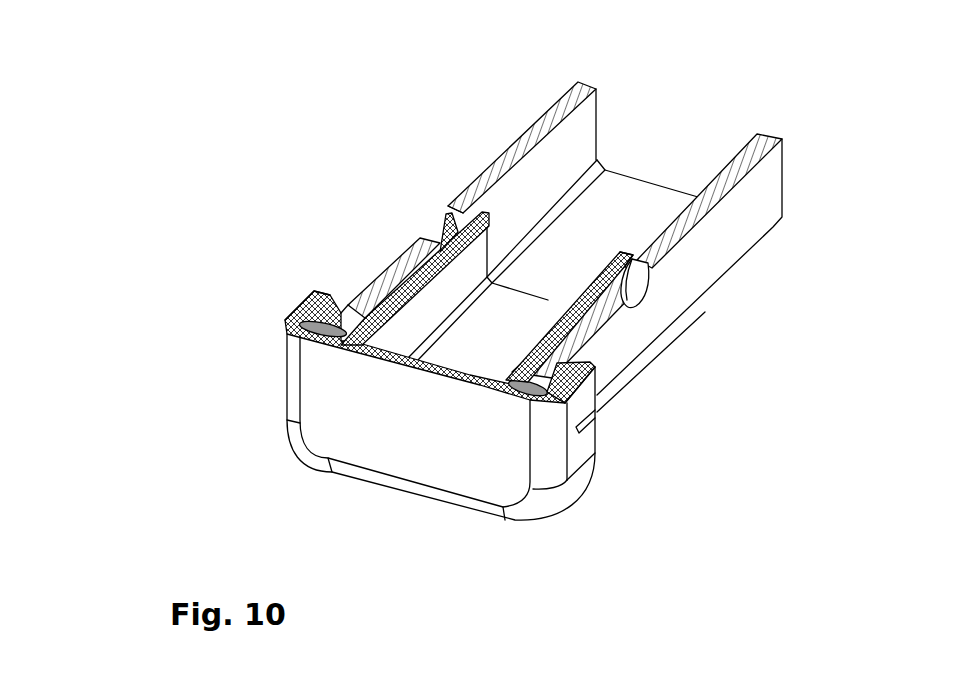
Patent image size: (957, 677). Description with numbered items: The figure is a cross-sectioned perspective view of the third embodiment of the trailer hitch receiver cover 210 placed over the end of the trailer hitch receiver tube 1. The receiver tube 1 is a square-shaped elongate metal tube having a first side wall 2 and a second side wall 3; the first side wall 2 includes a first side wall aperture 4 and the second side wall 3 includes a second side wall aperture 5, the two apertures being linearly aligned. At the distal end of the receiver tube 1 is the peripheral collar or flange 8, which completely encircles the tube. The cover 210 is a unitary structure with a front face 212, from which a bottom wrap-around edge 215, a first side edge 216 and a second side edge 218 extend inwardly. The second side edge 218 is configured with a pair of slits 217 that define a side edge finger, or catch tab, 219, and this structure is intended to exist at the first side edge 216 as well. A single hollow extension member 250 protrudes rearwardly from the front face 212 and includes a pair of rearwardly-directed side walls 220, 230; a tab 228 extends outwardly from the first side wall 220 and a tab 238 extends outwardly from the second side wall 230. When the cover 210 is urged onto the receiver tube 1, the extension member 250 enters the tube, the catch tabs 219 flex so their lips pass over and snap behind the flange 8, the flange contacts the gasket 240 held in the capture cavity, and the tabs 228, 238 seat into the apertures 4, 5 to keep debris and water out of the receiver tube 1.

The trailer hitch receiver tube 1 is at (648, 193).
The first side wall 2 is at (555, 112).
The second side wall 3 is at (750, 197).
The first side wall aperture 4 is at (452, 212).
The second side wall aperture 5 is at (642, 278).
The peripheral collar or flange 8 is at (338, 311).
The trailer hitch receiver cover 210 is at (137, 231).
The front face 212 is at (437, 468).
The bottom wrap-around edge 215 is at (368, 475).
The first side edge 216 is at (452, 461).
The slits 217 is at (587, 421).
The second side edge 218 is at (573, 463).
The side edge finger (catch tab) 219 is at (306, 303).
The first side wall 220 is at (432, 294).
The tab 228 is at (450, 232).
The second side wall 230 is at (565, 313).
The tab 238 is at (619, 282).
The gasket 240 is at (317, 327).
The hollow extension member 250 is at (494, 290).